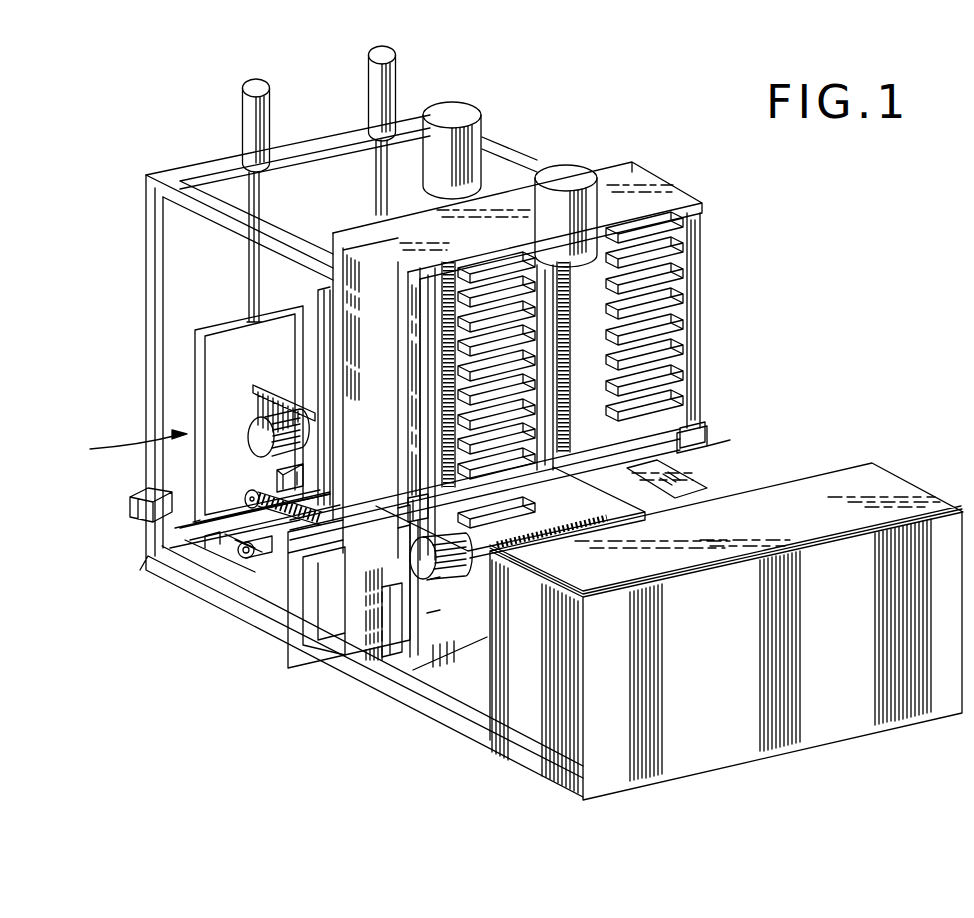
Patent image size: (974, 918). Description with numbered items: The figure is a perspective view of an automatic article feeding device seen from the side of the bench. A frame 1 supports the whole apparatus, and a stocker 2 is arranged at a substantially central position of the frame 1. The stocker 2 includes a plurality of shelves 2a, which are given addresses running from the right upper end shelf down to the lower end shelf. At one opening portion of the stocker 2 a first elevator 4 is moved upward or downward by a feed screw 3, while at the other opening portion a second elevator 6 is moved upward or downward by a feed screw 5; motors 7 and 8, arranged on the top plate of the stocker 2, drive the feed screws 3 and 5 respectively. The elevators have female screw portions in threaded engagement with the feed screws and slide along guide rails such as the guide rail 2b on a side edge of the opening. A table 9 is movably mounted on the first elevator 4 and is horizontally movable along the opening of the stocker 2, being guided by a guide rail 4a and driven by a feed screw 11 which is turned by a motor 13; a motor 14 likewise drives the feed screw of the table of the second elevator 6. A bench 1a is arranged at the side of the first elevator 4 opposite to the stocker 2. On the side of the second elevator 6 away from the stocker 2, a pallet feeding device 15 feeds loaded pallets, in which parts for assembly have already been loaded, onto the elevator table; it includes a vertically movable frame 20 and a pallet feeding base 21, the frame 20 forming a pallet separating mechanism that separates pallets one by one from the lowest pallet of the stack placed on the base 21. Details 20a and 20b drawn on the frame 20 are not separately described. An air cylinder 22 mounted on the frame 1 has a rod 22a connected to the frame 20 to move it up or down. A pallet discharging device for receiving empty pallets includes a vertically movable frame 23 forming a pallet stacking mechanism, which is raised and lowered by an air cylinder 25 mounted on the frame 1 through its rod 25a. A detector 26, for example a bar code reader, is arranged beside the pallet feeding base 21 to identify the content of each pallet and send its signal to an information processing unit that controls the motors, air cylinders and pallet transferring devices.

The frame 1 is at (145, 265).
The bench 1a is at (835, 718).
The stocker 2 is at (625, 200).
The shelves 2a is at (700, 218).
The guide rail 2b is at (404, 310).
The feed screw 3 is at (551, 386).
The first elevator 4 is at (490, 560).
The guide rail 4a is at (413, 530).
The feed screw 5 is at (440, 268).
The second elevator 6 is at (259, 384).
The motor 7 is at (567, 178).
The motor 8 is at (470, 113).
The table 9 is at (728, 453).
The feed screw 11 is at (550, 535).
The motor 13 is at (442, 578).
The motor 14 is at (248, 428).
The pallet feeding device 15 is at (126, 448).
The vertically movable frame 20 is at (196, 337).
The bracket 20a is at (285, 475).
The roller and chain 20b is at (290, 497).
The pallet feeding base 21 is at (268, 540).
The air cylinder 22 is at (255, 118).
The rod 22a is at (248, 254).
The vertically movable frame 23 is at (327, 300).
The air cylinder 25 is at (388, 82).
The rod 25a is at (378, 201).
The detector 26 is at (132, 507).